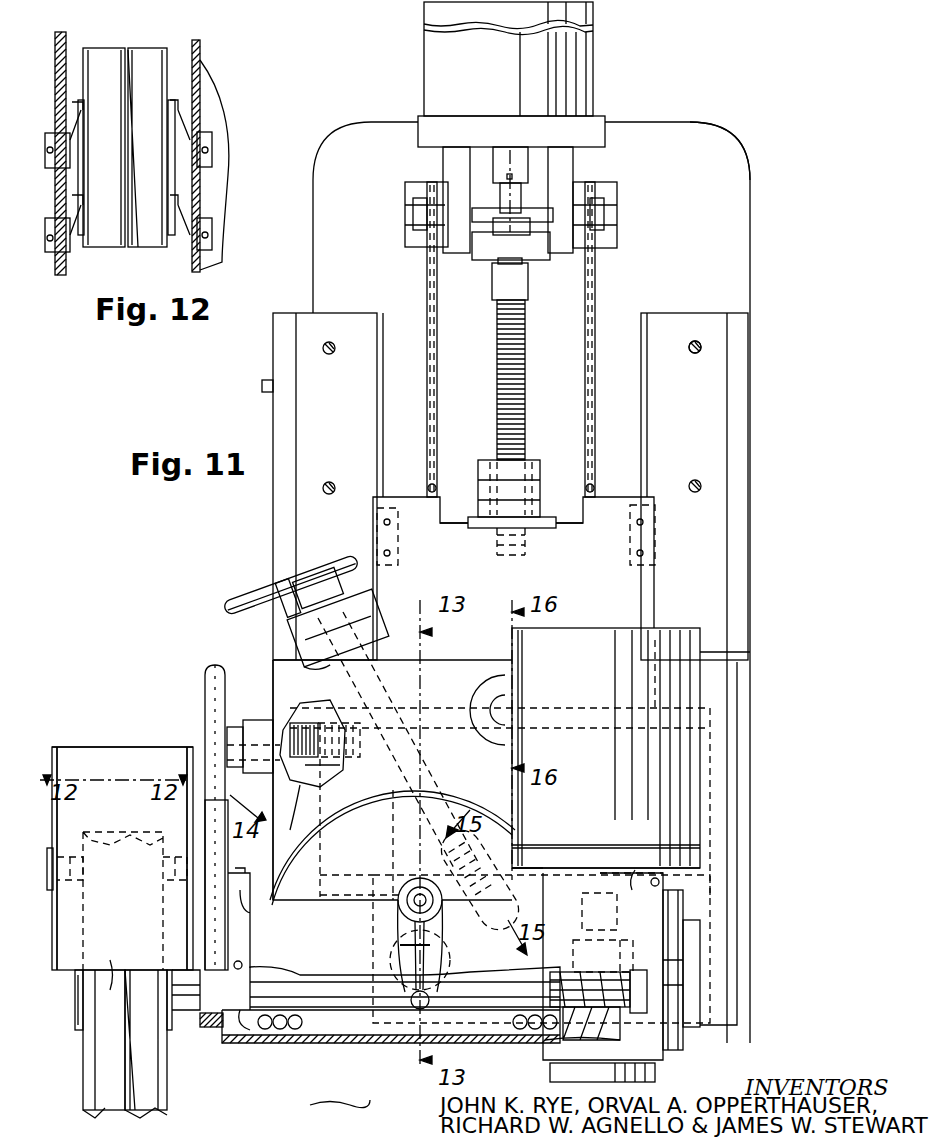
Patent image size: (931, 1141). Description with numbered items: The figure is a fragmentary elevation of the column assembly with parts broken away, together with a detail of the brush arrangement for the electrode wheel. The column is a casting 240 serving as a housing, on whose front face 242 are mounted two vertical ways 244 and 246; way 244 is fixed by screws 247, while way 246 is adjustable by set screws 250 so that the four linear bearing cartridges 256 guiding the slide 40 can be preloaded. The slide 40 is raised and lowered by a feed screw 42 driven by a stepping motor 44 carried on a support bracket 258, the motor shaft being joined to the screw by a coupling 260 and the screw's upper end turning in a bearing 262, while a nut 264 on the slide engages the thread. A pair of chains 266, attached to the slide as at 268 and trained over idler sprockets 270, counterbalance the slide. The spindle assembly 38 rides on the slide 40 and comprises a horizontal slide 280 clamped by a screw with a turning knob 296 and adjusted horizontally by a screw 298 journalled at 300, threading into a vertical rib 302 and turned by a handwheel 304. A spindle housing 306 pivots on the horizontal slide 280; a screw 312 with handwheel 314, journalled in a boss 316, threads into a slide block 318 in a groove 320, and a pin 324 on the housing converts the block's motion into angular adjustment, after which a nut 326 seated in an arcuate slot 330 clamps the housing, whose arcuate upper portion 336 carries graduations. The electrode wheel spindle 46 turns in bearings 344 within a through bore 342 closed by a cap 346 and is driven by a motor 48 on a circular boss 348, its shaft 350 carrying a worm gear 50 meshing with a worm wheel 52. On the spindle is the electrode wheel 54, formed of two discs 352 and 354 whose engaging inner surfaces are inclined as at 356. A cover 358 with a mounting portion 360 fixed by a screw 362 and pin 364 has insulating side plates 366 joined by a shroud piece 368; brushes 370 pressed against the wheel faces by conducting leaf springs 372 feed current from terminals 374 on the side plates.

In FIG. 11, the spindle assembly 38 is at (268, 672).
In FIG. 11, the slide 40 is at (620, 503).
In FIG. 11, the feed screw 42 is at (526, 333).
In FIG. 11, the motor 44 is at (590, 72).
In FIG. 11, the electrode wheel spindle 46 is at (295, 1008).
In FIG. 11, the motor 48 is at (700, 655).
In FIG. 11, the worm gear 50 is at (592, 980).
In FIG. 11, the worm wheel 52 is at (620, 1038).
In FIG. 11, the electrode wheel 54 is at (152, 1062).
In FIG. 11, the casting 240 is at (752, 240).
In FIG. 11, the front face 242 is at (748, 185).
In FIG. 11, the way 244 is at (672, 313).
In FIG. 11, the way 246 is at (335, 313).
In FIG. 11, the screws 247 is at (693, 353).
In FIG. 11, the set screws 250 is at (262, 388).
In FIG. 11, the linear bearing cartridges 256 is at (612, 565).
In FIG. 11, the support bracket 258 is at (575, 172).
In FIG. 11, the coupling 260 is at (511, 160).
In FIG. 11, the bearing 262 is at (528, 284).
In FIG. 11, the nut 264 is at (540, 465).
In FIG. 11, the chains 266 is at (438, 390).
In FIG. 11, the chain connection 268 is at (442, 492).
In FIG. 11, the idler sprockets 270 is at (413, 232).
In FIG. 11, the horizontal slide 280 is at (458, 660).
In FIG. 11, the turning knob 296 is at (505, 682).
In FIG. 11, the screw 298 is at (345, 775).
In FIG. 11, the journal 300 is at (298, 790).
In FIG. 11, the vertical rib 302 is at (320, 775).
In FIG. 11, the handwheel 304 is at (205, 690).
In FIG. 11, the spindle housing 306 is at (374, 942).
In FIG. 11, the screw 312 is at (425, 755).
In FIG. 11, the handwheel 314 is at (305, 560).
In FIG. 11, the boss 316 is at (375, 630).
In FIG. 11, the slide block 318 is at (606, 843).
In FIG. 11, the groove 320 is at (606, 858).
In FIG. 11, the pin 324 is at (480, 935).
In FIG. 11, the nut 326 is at (412, 910).
In FIG. 11, the arcuate slot 330 is at (398, 880).
In FIG. 11, the upper portion 336 is at (445, 810).
In FIG. 11, the through bore 342 is at (258, 1032).
In FIG. 11, the bearings 344 is at (270, 1012).
In FIG. 11, the cap 346 is at (690, 926).
In FIG. 11, the circular boss 348 is at (582, 893).
In FIG. 11, the shaft 350 is at (646, 869).
In FIG. 12, the disc 352 is at (100, 48).
In FIG. 11, the disc 352 is at (90, 1100).
In FIG. 12, the disc 354 is at (148, 55).
In FIG. 11, the disc 354 is at (150, 1095).
In FIG. 11, the inclined inner surfaces 356 is at (116, 962).
In FIG. 11, the cover 358 is at (73, 747).
In FIG. 11, the mounting portion 360 is at (226, 858).
In FIG. 11, the screw 362 is at (248, 900).
In FIG. 11, the pin 364 is at (243, 962).
In FIG. 12, the side plates 366 is at (200, 185).
In FIG. 11, the side plates 366 is at (187, 760).
In FIG. 11, the shroud piece 368 is at (128, 747).
In FIG. 12, the brushes 370 is at (97, 125).
In FIG. 12, the springs 372 is at (80, 118).
In FIG. 12, the terminals 374 is at (210, 140).